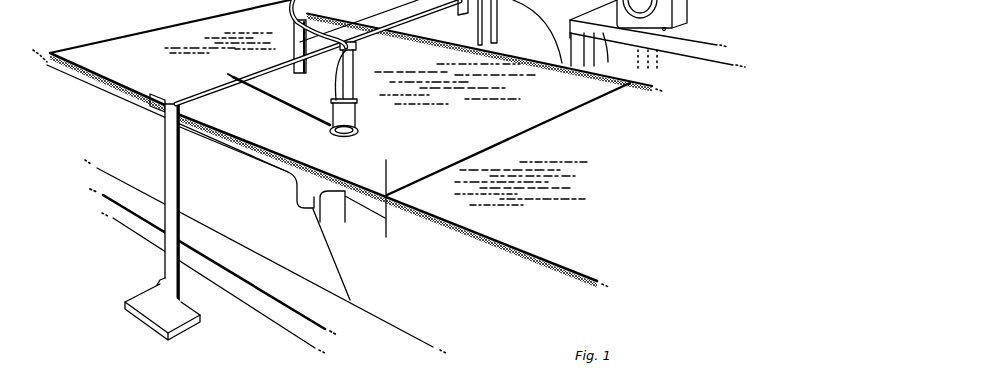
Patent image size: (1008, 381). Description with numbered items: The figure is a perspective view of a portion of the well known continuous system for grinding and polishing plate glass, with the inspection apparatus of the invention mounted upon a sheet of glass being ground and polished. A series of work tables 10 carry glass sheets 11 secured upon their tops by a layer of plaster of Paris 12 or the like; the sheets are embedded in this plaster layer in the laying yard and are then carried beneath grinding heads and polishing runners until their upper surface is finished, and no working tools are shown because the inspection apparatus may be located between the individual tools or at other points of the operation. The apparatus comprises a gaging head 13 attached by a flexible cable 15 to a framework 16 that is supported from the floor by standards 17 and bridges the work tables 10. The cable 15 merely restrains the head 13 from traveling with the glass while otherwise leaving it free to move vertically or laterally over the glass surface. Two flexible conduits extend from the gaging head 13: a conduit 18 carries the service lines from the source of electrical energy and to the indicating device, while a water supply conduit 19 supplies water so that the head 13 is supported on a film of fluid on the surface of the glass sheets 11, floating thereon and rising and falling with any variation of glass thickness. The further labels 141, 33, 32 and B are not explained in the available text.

The work tables 10 is at (123, 120).
The glass sheets 11 is at (160, 50).
The layer of plaster of Paris 12 is at (280, 161).
The gaging head 13 is at (361, 124).
The flexible cable 15 is at (298, 109).
The framework 16 is at (225, 92).
The standards 17 is at (165, 164).
The conduit 18 is at (352, 77).
The water supply conduit 19 is at (333, 88).
The fitting 141 is at (125, 380).
The rollers 33 is at (137, 380).
The bar 32 is at (245, 380).
The direction B is at (370, 380).